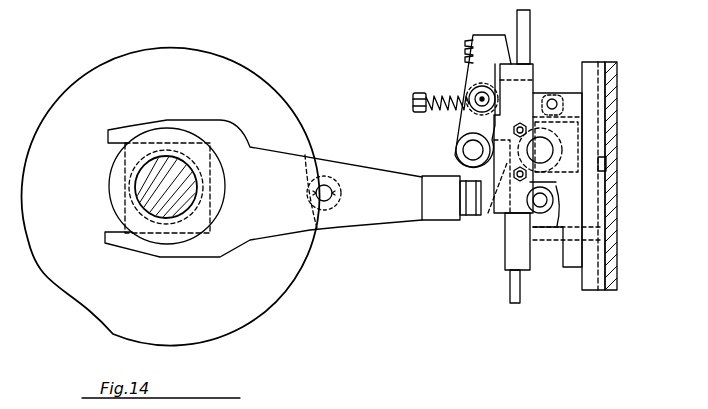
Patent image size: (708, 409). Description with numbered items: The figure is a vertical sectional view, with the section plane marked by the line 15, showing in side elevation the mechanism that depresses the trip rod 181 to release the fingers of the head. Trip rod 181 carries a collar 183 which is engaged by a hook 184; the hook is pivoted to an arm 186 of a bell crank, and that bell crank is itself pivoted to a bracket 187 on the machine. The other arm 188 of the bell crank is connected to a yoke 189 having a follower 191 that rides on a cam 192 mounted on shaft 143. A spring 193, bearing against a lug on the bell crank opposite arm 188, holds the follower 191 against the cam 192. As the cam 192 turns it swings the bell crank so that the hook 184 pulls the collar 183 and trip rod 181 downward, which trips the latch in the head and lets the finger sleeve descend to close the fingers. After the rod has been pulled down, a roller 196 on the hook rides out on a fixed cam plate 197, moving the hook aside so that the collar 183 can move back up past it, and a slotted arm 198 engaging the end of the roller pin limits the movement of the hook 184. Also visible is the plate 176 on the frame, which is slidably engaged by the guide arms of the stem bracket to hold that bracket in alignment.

The section line 15- 15 is at (486, 313).
The shaft 143 is at (152, 186).
The plate 176 is at (607, 197).
The trip rod 181 is at (517, 15).
The collar 183 is at (527, 68).
The hook 184 is at (480, 62).
The arm 186 is at (488, 213).
The bracket 187 is at (573, 125).
The arm 188 is at (533, 226).
The yoke 189 is at (393, 156).
The follower 191 is at (325, 177).
The cam 192 is at (291, 283).
The spring 193 is at (468, 106).
The roller 196 is at (469, 94).
The fixed cam plate 197 is at (530, 88).
The slotted arm 198 is at (542, 96).